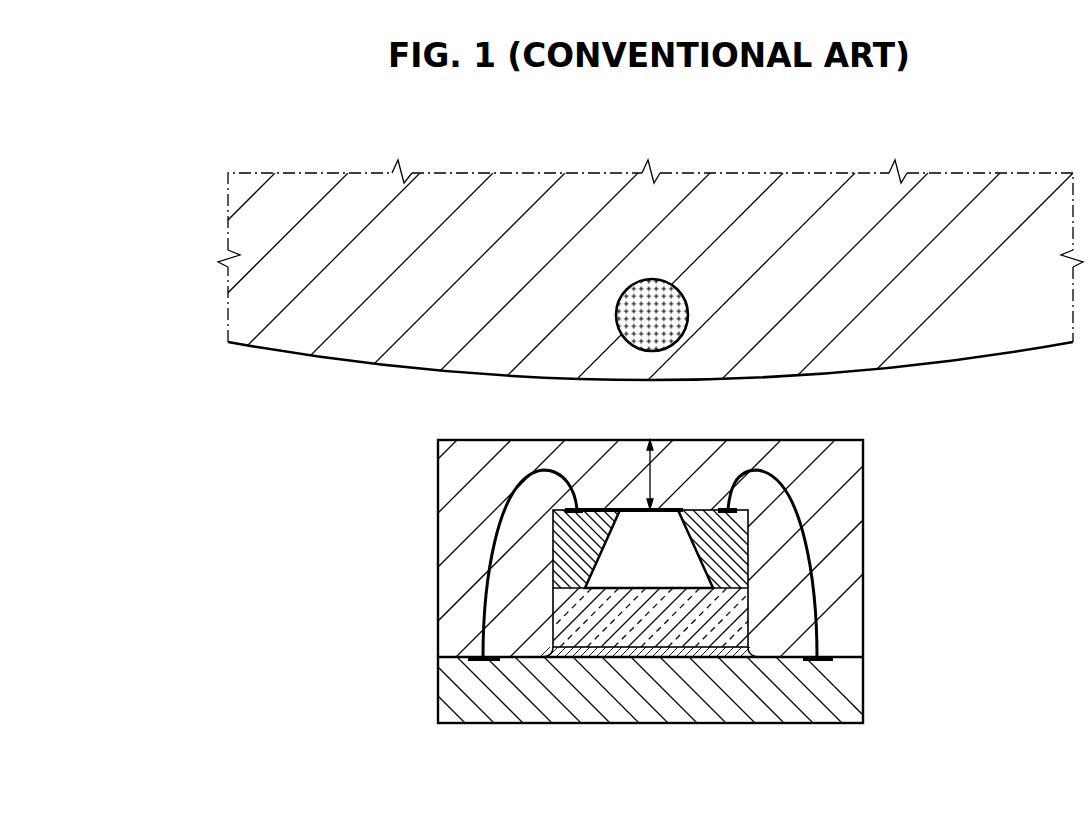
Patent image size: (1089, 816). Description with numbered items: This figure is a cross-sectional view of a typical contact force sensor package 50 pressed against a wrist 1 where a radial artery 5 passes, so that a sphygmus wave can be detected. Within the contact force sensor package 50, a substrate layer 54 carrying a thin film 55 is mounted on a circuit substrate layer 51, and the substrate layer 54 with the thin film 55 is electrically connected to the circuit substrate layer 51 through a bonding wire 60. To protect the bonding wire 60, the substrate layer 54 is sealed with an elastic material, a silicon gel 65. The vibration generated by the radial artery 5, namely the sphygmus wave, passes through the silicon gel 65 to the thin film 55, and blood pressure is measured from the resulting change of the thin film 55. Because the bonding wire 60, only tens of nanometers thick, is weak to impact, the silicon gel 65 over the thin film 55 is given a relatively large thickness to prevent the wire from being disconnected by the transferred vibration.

The wrist 1 is at (977, 353).
The radial artery 5 is at (660, 335).
The contact force sensor package 50 is at (592, 581).
The circuit substrate layer 51 is at (857, 690).
The substrate layer 54 is at (698, 578).
The thin film 55 is at (652, 513).
The bonding wire 60 is at (486, 572).
The silicon gel 65 is at (853, 494).